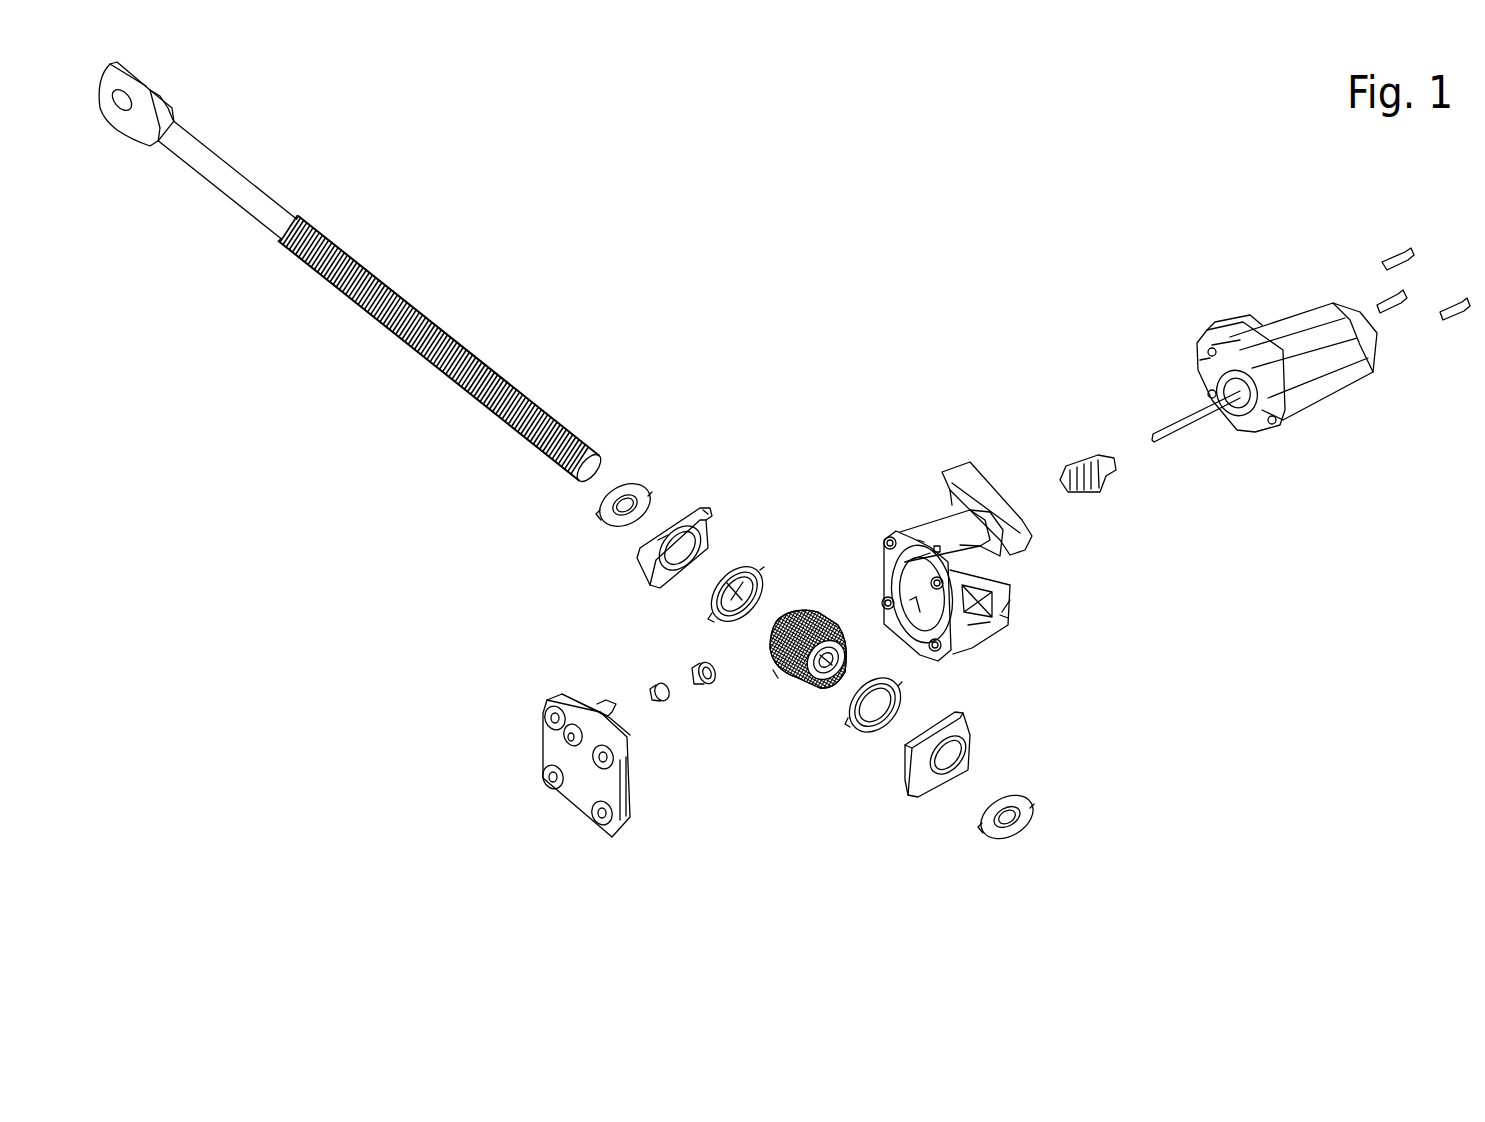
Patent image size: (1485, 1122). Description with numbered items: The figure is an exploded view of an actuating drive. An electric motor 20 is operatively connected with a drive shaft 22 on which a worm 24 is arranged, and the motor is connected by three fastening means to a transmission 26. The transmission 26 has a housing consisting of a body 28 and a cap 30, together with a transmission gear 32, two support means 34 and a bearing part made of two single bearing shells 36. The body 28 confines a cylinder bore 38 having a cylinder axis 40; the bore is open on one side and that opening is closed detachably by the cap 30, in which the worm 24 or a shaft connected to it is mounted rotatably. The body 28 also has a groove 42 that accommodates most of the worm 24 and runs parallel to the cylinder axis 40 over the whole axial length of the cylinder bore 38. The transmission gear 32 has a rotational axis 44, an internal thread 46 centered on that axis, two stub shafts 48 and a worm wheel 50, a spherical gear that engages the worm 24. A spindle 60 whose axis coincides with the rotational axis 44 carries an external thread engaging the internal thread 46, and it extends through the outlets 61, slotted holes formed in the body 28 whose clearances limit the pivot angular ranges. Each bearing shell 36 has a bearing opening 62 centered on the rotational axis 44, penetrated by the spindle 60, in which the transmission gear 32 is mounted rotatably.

The electric motor 20 is at (1297, 330).
The drive shaft 22 is at (1180, 437).
The worm 24 is at (1078, 462).
The transmission 26 is at (806, 795).
The body 28 is at (1000, 592).
The cap 30 is at (580, 787).
The transmission gear 32 is at (822, 576).
The support means 34 is at (857, 732).
The bearing shell 36 is at (638, 565).
The cylinder bore 38 is at (920, 613).
The cylinder axis 40 is at (887, 612).
The groove 42 is at (943, 563).
The rotational axis 44 is at (765, 622).
The internal thread 46 is at (813, 687).
The stub shaft 48 is at (773, 637).
The worm wheel 50 is at (773, 673).
The spindle 60 is at (420, 301).
The outlet 61 is at (1003, 613).
The bearing opening 62 is at (703, 527).